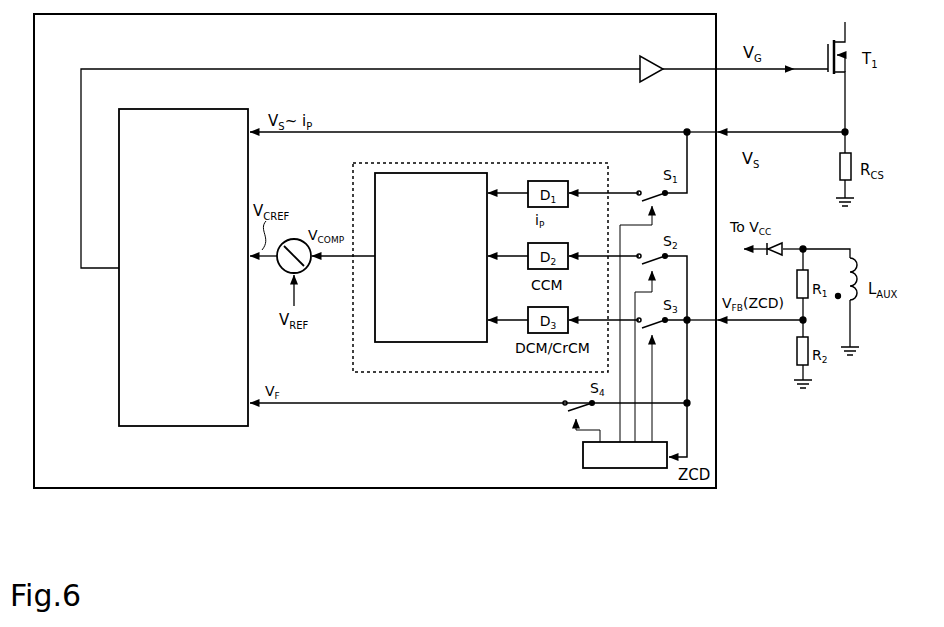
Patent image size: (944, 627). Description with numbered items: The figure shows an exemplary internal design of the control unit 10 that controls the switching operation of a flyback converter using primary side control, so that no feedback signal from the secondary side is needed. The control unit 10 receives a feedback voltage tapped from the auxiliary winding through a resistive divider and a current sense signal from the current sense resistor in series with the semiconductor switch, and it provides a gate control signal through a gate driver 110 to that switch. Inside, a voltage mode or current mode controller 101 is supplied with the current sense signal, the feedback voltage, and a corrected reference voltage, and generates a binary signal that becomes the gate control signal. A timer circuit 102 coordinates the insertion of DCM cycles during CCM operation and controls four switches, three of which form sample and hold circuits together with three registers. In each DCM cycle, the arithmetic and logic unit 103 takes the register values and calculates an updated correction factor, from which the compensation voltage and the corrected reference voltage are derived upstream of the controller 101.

The control unit 10 is at (375, 251).
The voltage mode or current mode controller 101 is at (183, 267).
The timer circuit 102 is at (625, 455).
The arithmetic and logic unit 103 is at (431, 257).
The gate driver 110 is at (591, 81).